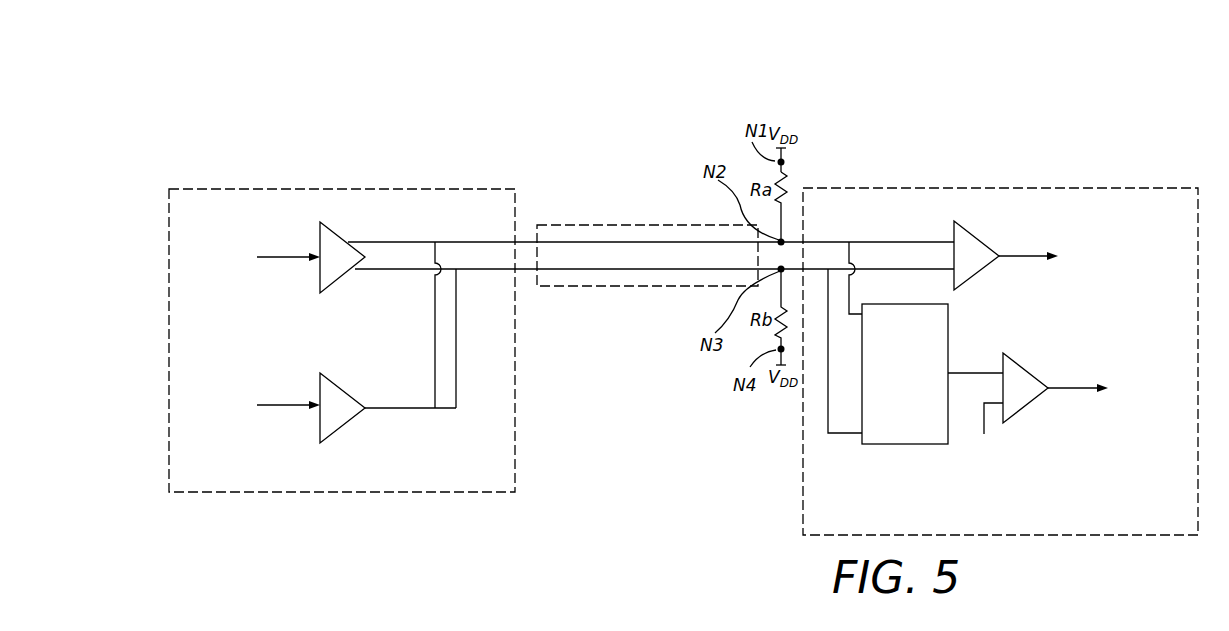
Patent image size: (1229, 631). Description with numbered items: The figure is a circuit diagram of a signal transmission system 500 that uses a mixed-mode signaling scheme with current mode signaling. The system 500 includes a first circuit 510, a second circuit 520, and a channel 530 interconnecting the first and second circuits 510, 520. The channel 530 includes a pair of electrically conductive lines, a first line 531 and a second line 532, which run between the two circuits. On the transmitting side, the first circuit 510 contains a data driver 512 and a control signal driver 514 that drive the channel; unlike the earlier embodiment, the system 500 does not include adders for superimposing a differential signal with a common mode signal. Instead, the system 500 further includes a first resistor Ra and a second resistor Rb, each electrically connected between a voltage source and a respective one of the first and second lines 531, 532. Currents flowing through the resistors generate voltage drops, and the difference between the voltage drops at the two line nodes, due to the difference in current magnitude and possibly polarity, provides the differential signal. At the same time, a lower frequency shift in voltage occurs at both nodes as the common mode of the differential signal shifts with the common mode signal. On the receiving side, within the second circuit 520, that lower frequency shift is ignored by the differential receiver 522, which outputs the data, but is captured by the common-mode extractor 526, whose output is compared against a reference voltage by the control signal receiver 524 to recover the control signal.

The system 500 is at (667, 106).
The first circuit 510 is at (440, 189).
The data driver 512 is at (330, 226).
The control signal driver 514 is at (330, 377).
The channel 530 is at (637, 224).
The first line 531 is at (558, 241).
The second line 532 is at (598, 271).
The second circuit 520 is at (1124, 188).
The differential receiver 522 is at (977, 230).
The control signal receiver 524 is at (1025, 363).
The common-mode extractor 526 is at (915, 446).